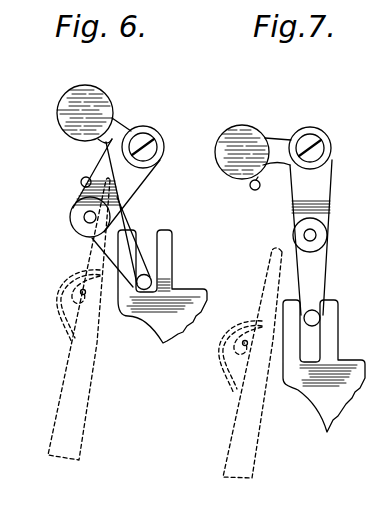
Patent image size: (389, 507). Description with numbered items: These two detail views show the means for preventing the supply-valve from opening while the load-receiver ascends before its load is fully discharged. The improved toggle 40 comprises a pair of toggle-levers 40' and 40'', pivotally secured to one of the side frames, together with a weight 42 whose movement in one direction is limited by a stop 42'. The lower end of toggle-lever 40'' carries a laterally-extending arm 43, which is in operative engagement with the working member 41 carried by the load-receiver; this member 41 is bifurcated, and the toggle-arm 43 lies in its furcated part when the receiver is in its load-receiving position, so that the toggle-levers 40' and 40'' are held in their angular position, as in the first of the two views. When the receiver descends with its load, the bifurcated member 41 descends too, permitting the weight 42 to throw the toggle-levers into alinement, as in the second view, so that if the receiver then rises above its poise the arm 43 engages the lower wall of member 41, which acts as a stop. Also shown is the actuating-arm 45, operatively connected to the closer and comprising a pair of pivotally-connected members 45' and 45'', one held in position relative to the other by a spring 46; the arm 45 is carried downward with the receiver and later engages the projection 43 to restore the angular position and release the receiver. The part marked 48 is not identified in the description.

In FIG. 6, the toggle 40 is at (138, 132).
In FIG. 7, the toggle 40 is at (298, 136).
In FIG. 6, the toggle-lever 40' is at (84, 211).
In FIG. 7, the toggle-lever 40' is at (317, 237).
In FIG. 6, the toggle-lever 40'' is at (132, 223).
In FIG. 7, the toggle-lever 40'' is at (334, 279).
In FIG. 6, the working member 41 is at (167, 245).
In FIG. 7, the working member 41 is at (333, 340).
In FIG. 6, the weight 42 is at (67, 103).
In FIG. 7, the weight 42 is at (242, 133).
In FIG. 6, the stop 42' is at (51, 172).
In FIG. 7, the stop 42' is at (228, 191).
In FIG. 6, the laterally-extending arm 43 is at (150, 279).
In FIG. 7, the laterally-extending arm 43 is at (320, 317).
In FIG. 6, the actuating-arm 45 is at (81, 319).
In FIG. 7, the actuating-arm 45 is at (254, 363).
In FIG. 6, the member of actuating-arm 45' is at (45, 370).
In FIG. 7, the member of actuating-arm 45' is at (217, 402).
In FIG. 6, the member of actuating-arm 45'' is at (54, 264).
In FIG. 7, the member of actuating-arm 45'' is at (242, 286).
In FIG. 6, the spring 46 is at (58, 300).
In FIG. 7, the spring 46 is at (223, 353).
In FIG. 6, the pivot pin 48 is at (88, 217).
In FIG. 7, the pivot pin 48 is at (307, 233).